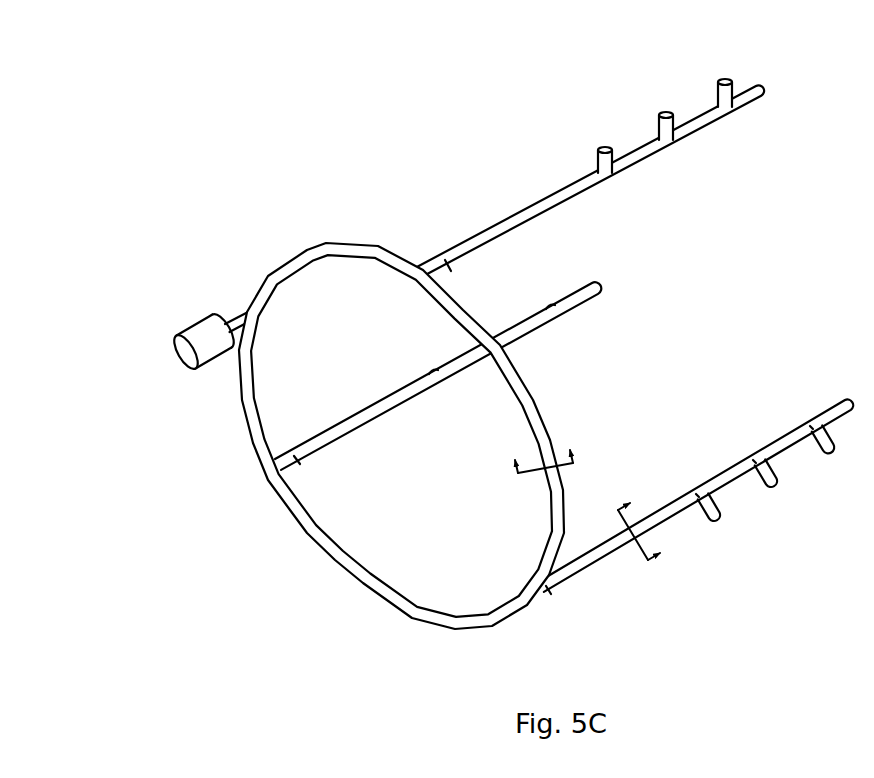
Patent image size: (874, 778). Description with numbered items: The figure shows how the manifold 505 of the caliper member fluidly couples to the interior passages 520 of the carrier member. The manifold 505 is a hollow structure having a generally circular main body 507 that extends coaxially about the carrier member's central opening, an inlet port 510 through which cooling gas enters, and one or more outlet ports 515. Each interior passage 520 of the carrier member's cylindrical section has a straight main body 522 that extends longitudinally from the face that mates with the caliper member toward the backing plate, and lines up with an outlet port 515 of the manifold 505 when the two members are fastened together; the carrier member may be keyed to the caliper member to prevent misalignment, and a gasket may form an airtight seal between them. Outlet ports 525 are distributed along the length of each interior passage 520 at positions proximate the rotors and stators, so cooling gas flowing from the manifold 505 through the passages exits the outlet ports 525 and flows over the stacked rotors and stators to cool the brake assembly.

The manifold 505 is at (82, 214).
The main body 507 is at (328, 243).
The inlet port 510 is at (193, 323).
The outlet ports 515 is at (290, 473).
The interior passages 520 is at (610, 151).
The main body 522 is at (493, 238).
The outlet ports 525 is at (724, 79).